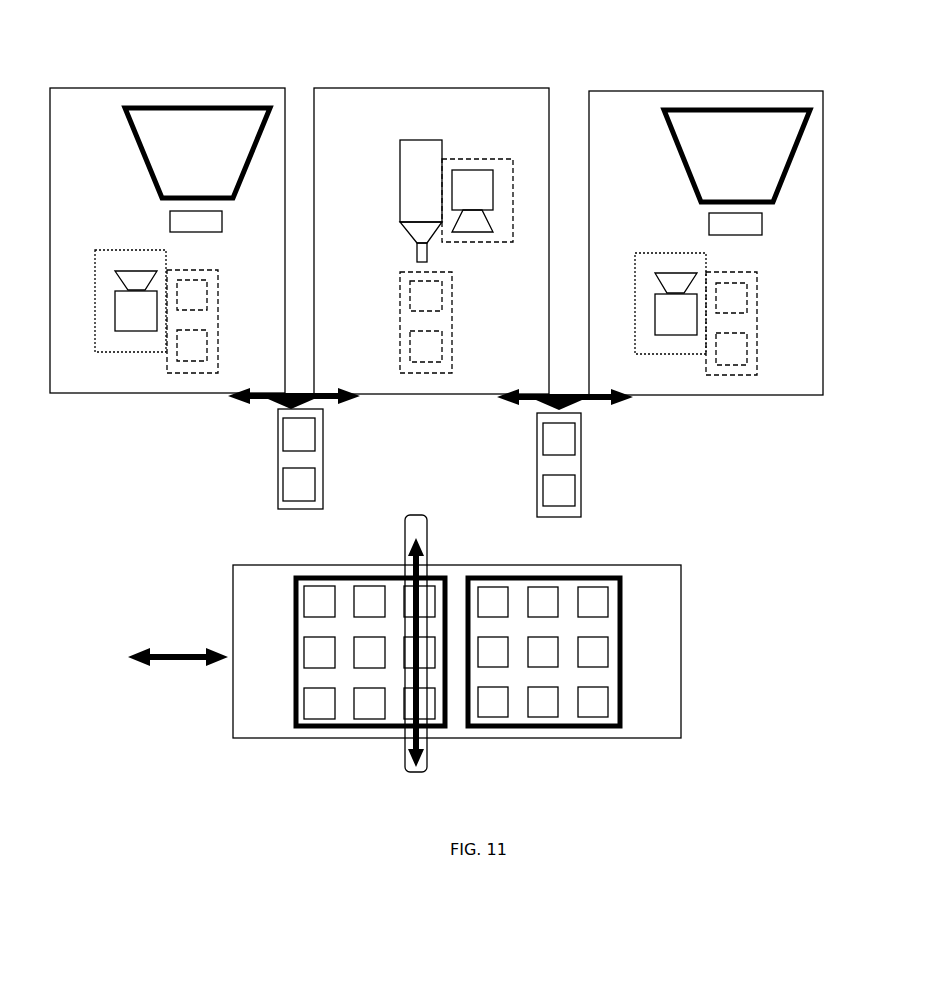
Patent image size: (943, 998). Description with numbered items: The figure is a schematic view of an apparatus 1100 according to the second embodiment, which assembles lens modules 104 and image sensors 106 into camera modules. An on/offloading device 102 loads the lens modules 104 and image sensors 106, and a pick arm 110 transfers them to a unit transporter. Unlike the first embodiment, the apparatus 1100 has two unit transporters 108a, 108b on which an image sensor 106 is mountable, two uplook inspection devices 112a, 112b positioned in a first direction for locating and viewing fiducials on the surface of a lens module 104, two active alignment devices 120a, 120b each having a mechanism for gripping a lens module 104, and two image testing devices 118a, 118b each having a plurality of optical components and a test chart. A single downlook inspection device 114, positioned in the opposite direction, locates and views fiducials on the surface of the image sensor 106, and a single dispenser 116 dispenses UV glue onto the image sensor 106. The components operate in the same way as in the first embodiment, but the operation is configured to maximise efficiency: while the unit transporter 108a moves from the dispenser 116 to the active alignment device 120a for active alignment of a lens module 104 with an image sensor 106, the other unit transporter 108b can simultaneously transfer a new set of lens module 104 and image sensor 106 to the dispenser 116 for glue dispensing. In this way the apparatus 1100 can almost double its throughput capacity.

The on/offloading device 102 is at (681, 608).
The lens module 104 is at (316, 703).
The image sensor 106 is at (543, 703).
The unit transporter 108a is at (283, 458).
The unit transporter 108b is at (577, 468).
The pick arm 110 is at (403, 531).
The uplook inspection device 112a is at (117, 306).
The uplook inspection device 112b is at (657, 333).
The downlook inspection device 114 is at (474, 163).
The dispenser 116 is at (412, 134).
The image testing device 118a is at (180, 103).
The image testing device 118b is at (742, 106).
The active alignment device 120a is at (162, 212).
The active alignment device 120b is at (701, 222).
The apparatus 1100 is at (727, 809).